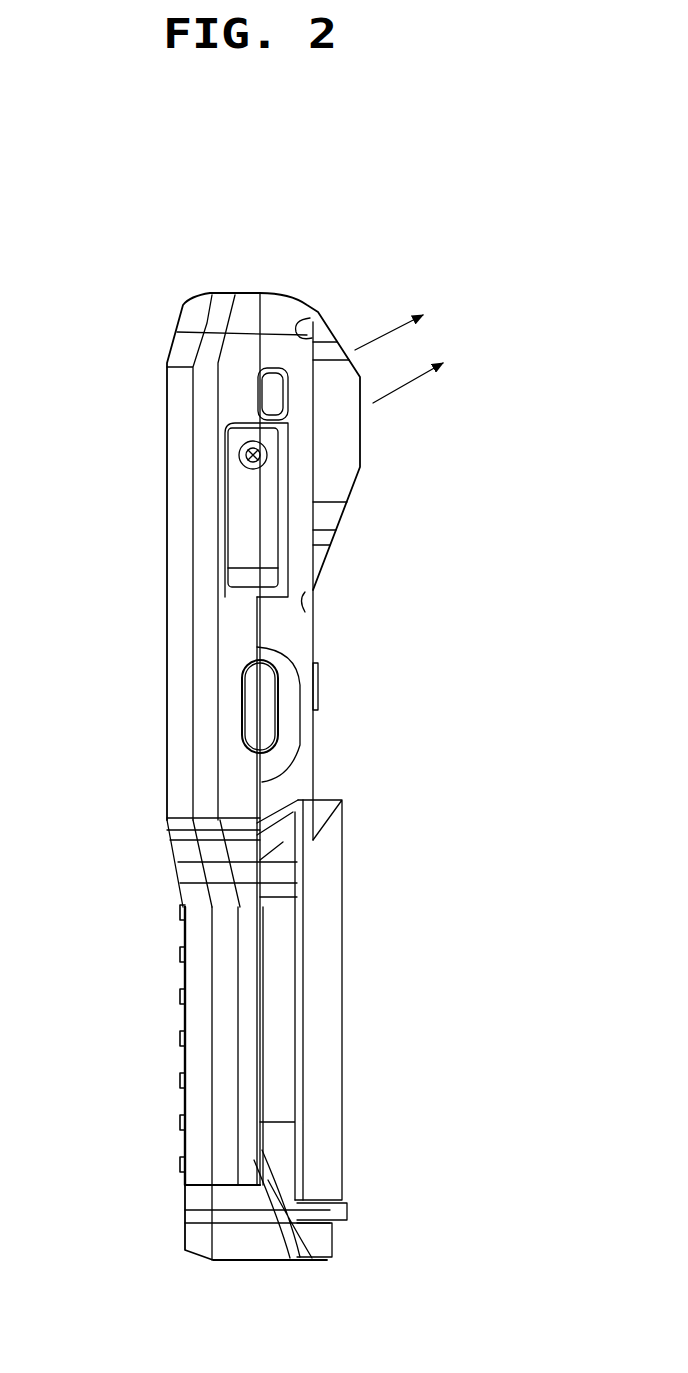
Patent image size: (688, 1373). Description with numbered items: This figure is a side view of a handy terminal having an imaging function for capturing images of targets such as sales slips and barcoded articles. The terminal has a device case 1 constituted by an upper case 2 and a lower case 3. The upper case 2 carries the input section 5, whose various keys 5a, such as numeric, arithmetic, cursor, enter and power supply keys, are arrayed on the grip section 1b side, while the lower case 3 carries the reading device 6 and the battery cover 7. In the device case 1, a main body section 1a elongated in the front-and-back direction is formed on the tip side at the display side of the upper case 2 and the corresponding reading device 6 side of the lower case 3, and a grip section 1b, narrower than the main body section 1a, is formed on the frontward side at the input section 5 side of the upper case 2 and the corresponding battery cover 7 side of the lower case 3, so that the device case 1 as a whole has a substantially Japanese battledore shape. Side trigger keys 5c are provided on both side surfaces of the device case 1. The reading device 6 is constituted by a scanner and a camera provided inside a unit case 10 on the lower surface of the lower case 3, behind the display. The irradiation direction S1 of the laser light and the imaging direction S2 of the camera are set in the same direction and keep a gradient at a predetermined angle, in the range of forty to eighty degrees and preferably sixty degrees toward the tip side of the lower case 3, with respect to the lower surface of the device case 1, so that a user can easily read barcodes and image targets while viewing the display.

The device case 1 is at (180, 300).
The main body section 1a is at (240, 400).
The grip section 1b is at (288, 962).
The upper case 2 is at (182, 630).
The lower case 3 is at (290, 624).
The input section 5 is at (178, 1068).
The keys 5a is at (183, 942).
The side trigger keys 5c is at (258, 705).
The reading device 6 is at (365, 433).
The battery cover 7 is at (322, 1058).
The unit case 10 is at (337, 458).
The irradiation direction S1 is at (405, 387).
The imaging direction S2 is at (395, 328).